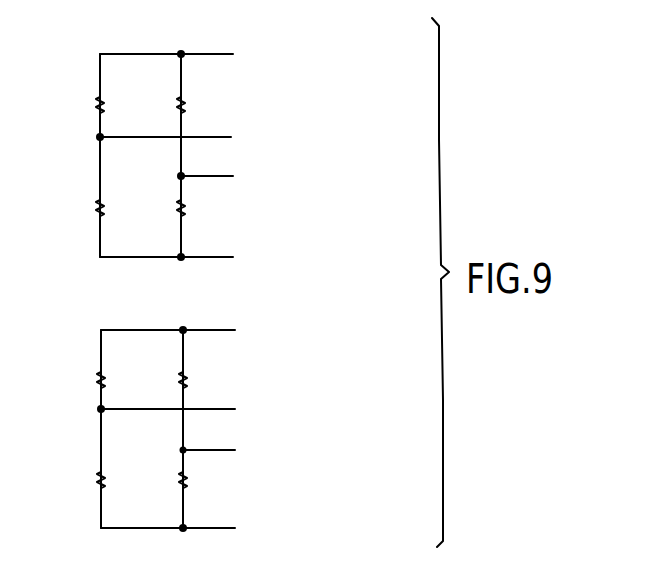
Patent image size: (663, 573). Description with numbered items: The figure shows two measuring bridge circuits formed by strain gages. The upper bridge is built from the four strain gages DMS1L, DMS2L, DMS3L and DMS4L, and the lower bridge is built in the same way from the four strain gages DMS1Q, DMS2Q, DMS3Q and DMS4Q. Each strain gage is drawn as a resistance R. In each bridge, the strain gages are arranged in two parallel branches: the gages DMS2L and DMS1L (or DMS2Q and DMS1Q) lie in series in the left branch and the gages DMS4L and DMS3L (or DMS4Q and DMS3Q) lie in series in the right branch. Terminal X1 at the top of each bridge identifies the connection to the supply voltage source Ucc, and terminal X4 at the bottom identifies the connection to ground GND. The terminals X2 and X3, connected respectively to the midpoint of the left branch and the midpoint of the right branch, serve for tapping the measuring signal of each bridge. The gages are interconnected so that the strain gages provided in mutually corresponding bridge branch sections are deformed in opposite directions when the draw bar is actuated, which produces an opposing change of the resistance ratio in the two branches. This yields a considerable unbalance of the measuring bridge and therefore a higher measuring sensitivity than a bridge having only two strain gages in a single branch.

The terminal connection to voltage source X1 is at (226, 192).
The measuring signal tapping terminal X2 is at (219, 273).
The measuring signal tapping terminal X3 is at (262, 313).
The terminal connection to ground X4 is at (232, 394).
The strain gage DMS1L is at (83, 218).
The strain gage DMS2L is at (83, 101).
The strain gage DMS3L is at (164, 210).
The strain gage DMS4L is at (164, 93).
The strain gage DMS1Q is at (84, 482).
The strain gage DMS2Q is at (84, 370).
The strain gage DMS3Q is at (168, 482).
The strain gage DMS4Q is at (167, 367).
The resistance R is at (162, 294).